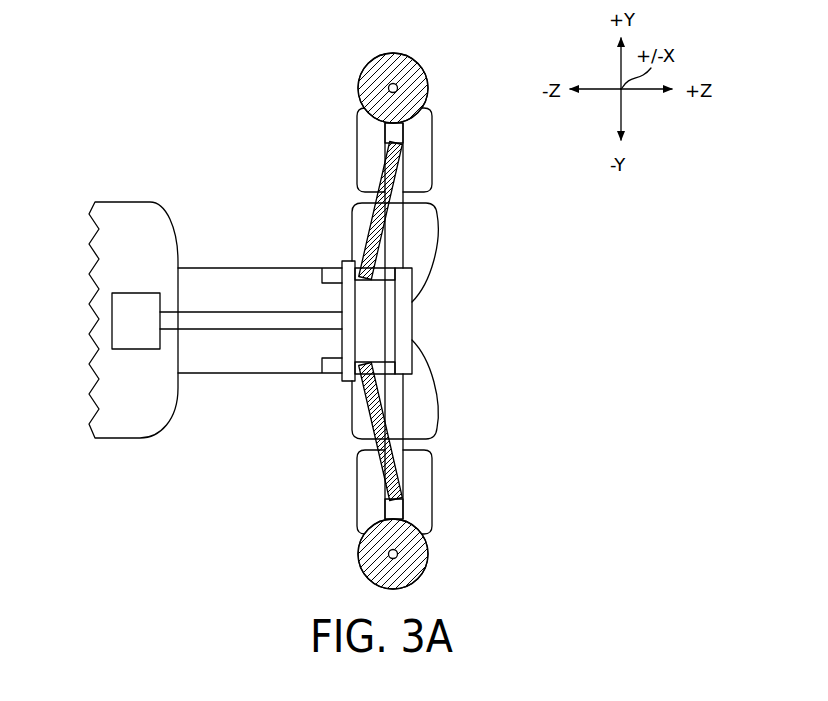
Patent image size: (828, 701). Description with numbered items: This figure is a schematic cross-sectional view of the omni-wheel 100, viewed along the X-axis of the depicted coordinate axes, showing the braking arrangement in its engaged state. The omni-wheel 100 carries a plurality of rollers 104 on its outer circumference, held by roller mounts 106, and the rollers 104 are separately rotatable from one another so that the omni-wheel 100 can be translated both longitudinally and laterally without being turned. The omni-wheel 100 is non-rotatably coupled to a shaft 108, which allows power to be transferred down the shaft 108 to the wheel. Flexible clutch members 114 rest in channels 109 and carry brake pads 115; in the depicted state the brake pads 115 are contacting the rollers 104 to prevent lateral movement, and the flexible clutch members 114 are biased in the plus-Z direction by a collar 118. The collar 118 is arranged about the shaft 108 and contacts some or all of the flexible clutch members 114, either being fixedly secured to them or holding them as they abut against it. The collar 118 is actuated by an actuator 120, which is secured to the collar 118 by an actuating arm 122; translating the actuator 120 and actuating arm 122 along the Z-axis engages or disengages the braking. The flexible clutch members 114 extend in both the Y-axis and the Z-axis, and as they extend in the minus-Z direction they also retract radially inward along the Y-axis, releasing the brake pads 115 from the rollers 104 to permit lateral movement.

The omni-wheel 100 is at (110, 135).
The rollers 104 is at (412, 60).
The roller mounts 106 is at (405, 250).
The shaft 108 is at (412, 283).
The channels 109 is at (387, 283).
The flexible clutch members 114 is at (398, 160).
The brake pads 115 is at (398, 131).
The collar 118 is at (322, 373).
The actuator 120 is at (143, 293).
The actuating arm 122 is at (262, 312).